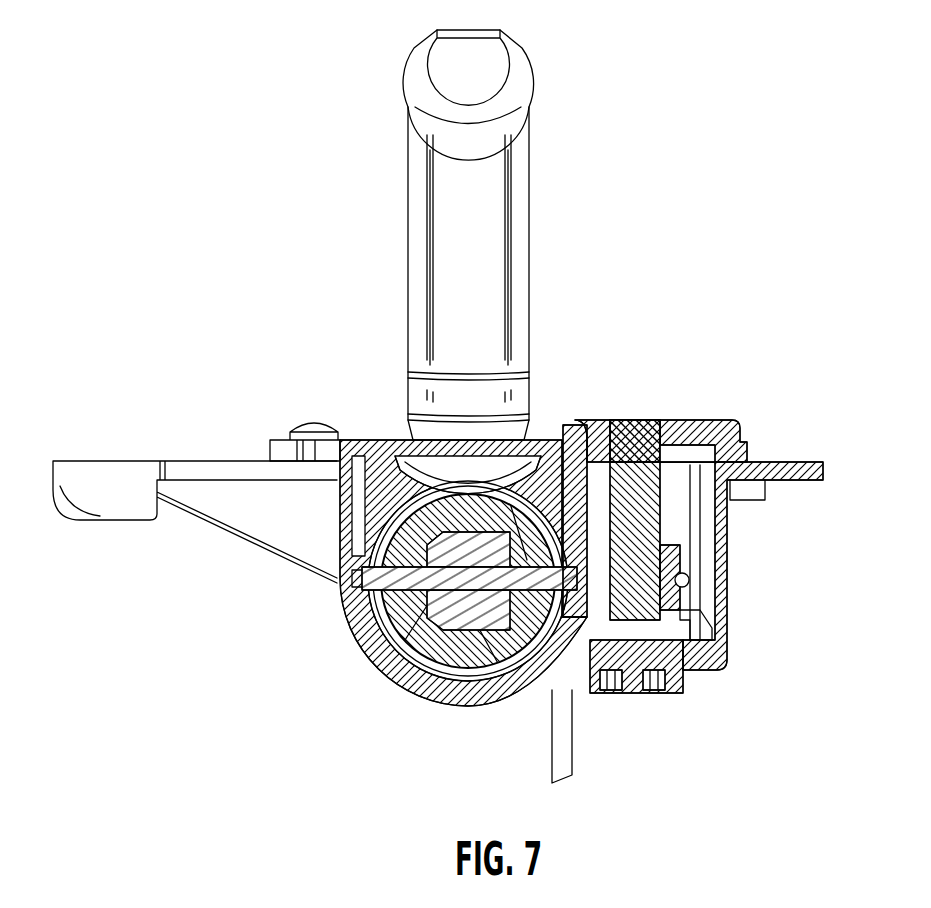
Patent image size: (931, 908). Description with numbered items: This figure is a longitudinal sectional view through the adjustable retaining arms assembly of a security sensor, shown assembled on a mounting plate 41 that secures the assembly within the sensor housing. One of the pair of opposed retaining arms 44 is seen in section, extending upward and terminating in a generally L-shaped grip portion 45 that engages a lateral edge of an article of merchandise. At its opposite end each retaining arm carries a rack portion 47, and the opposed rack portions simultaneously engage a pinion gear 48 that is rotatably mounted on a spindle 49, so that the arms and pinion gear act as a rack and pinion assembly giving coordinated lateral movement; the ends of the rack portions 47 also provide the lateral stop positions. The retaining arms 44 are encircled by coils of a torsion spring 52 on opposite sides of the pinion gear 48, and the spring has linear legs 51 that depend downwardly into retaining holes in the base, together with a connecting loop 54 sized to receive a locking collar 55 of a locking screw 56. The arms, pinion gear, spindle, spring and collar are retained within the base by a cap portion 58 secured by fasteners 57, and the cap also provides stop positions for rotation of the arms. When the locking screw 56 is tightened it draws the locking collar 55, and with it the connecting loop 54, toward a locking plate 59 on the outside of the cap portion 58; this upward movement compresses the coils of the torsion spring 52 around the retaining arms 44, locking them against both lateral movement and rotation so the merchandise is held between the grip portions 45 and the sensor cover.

The mounting plate 41 is at (110, 461).
The retaining arms 44 is at (440, 298).
The grip portion 45 is at (445, 72).
The rack portion 47 is at (398, 612).
The pinion gear 48 is at (472, 620).
The spindle 49 is at (370, 575).
The linear legs 51 is at (572, 745).
The torsion spring 52 is at (545, 510).
The connecting loop 54 is at (690, 580).
The locking collar 55 is at (690, 612).
The locking screw 56 is at (640, 682).
The fasteners 57 is at (312, 424).
The cap portion 58 is at (690, 420).
The locking plate 59 is at (668, 445).